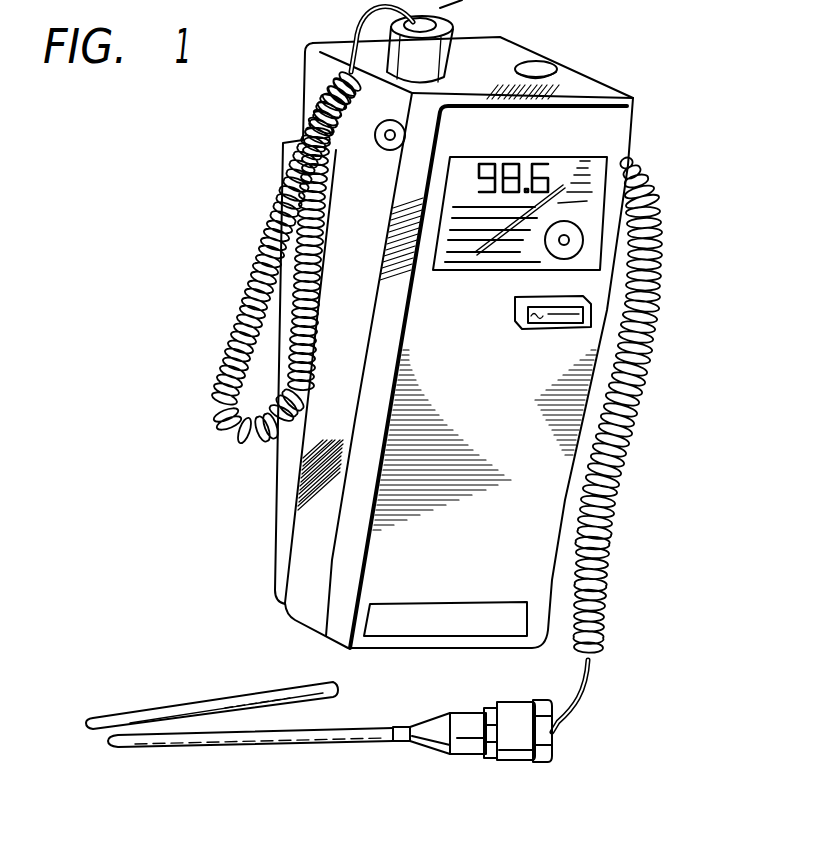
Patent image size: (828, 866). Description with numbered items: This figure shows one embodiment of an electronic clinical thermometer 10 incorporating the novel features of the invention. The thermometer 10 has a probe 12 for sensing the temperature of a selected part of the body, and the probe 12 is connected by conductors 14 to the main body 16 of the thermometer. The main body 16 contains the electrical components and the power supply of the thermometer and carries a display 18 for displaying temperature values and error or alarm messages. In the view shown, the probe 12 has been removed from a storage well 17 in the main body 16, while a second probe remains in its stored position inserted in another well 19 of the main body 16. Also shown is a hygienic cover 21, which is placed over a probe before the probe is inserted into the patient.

The electronic thermometer 10 is at (638, 80).
The probe 12 is at (237, 743).
The conductors 14 is at (622, 423).
The main body 16 is at (634, 131).
The storage well 17 is at (540, 61).
The display 18 is at (577, 195).
The well 19 is at (356, 48).
The hygienic cover 21 is at (138, 708).